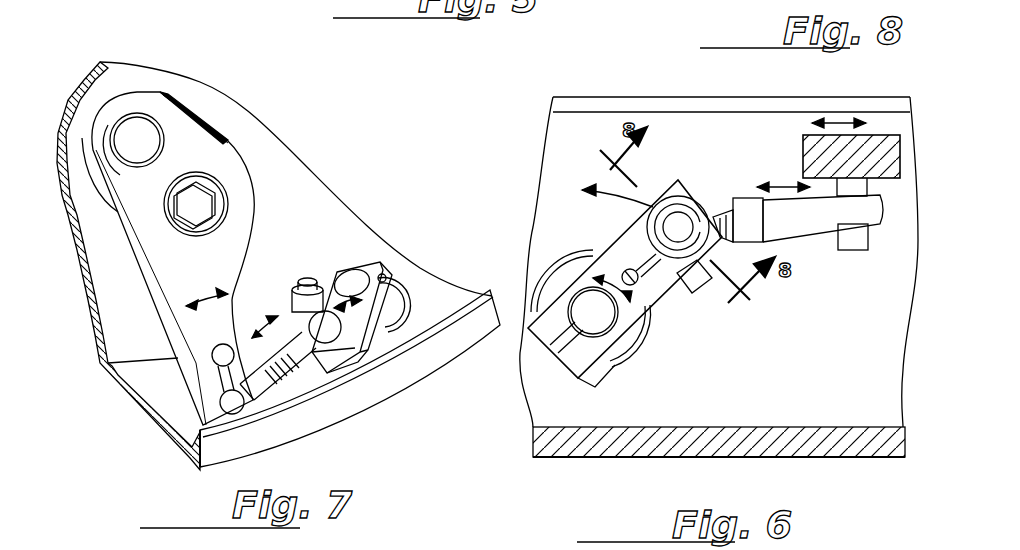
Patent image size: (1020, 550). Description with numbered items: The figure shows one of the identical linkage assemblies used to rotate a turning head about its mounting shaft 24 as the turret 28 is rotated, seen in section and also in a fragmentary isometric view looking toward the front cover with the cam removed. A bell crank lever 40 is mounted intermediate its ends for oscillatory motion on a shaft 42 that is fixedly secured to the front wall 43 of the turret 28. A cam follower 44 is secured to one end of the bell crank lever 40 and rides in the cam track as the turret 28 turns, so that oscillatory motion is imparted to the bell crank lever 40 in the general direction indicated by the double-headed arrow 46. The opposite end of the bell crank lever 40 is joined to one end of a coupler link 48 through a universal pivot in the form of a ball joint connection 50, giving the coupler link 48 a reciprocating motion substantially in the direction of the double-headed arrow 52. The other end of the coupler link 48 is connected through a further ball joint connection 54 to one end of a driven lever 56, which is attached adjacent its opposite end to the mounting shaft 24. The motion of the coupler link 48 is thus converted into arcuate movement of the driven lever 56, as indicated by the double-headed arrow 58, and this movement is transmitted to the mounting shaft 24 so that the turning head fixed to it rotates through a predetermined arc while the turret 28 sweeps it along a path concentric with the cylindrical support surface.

In FIG. 7, the mounting shaft 24 is at (352, 278).
In FIG. 6, the mounting shaft 24 is at (583, 305).
In FIG. 7, the turret 28 is at (152, 406).
In FIG. 6, the turret 28 is at (570, 143).
In FIG. 7, the bell crank lever 40 is at (238, 225).
In FIG. 6, the bell crank lever 40 is at (880, 142).
In FIG. 7, the shaft 42 is at (198, 202).
In FIG. 7, the front wall 43 is at (290, 160).
In FIG. 6, the front wall 43 is at (620, 440).
In FIG. 7, the cam follower 44 is at (117, 112).
In FIG. 7, the double-headed arrow 46 is at (210, 300).
In FIG. 6, the double-headed arrow 46 is at (838, 120).
In FIG. 7, the coupler link 48 is at (268, 362).
In FIG. 6, the coupler link 48 is at (800, 222).
In FIG. 6, the ball joint connection 50 is at (870, 228).
In FIG. 7, the double-headed arrow 52 is at (262, 328).
In FIG. 6, the double-headed arrow 52 is at (783, 185).
In FIG. 7, the ball joint connection 54 is at (322, 300).
In FIG. 6, the ball joint connection 54 is at (686, 224).
In FIG. 7, the driven lever 56 is at (352, 345).
In FIG. 6, the driven lever 56 is at (658, 290).
In FIG. 7, the double-headed arrow 58 is at (372, 330).
In FIG. 6, the double-headed arrow 58 is at (628, 268).